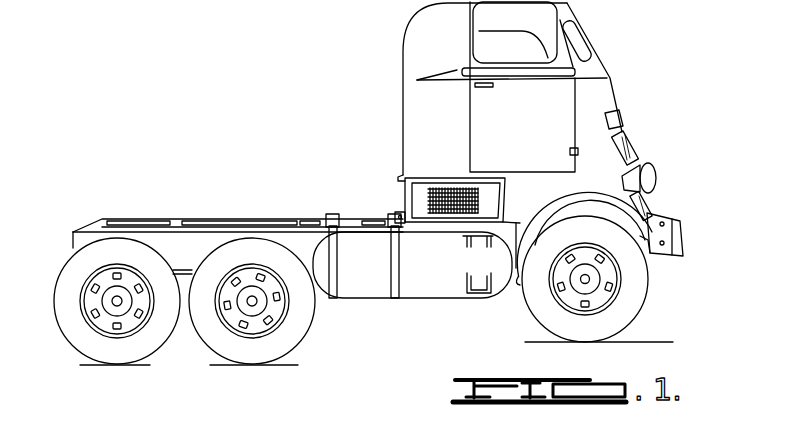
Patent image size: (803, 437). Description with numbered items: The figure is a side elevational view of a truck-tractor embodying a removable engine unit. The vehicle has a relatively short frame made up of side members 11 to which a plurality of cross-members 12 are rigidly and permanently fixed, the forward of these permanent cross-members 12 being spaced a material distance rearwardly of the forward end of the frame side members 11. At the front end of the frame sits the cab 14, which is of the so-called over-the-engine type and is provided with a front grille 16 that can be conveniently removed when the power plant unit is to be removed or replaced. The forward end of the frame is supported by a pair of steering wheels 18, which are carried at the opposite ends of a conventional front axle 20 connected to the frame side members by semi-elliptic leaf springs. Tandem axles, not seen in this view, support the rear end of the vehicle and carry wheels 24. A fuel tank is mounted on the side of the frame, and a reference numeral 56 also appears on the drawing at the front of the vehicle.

The frame side members 11 is at (292, 232).
The cross-members 12 is at (118, 220).
The cab 14 is at (402, 48).
The front grille 16 is at (633, 147).
The steering wheels 18 is at (645, 294).
The front axle 20 is at (412, 262).
The wheels 24 is at (213, 350).
The bumper bracket 56 is at (686, 234).